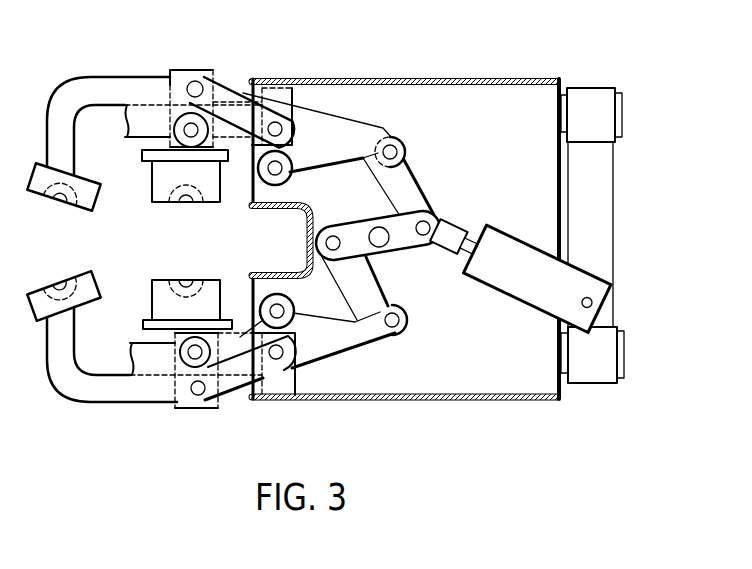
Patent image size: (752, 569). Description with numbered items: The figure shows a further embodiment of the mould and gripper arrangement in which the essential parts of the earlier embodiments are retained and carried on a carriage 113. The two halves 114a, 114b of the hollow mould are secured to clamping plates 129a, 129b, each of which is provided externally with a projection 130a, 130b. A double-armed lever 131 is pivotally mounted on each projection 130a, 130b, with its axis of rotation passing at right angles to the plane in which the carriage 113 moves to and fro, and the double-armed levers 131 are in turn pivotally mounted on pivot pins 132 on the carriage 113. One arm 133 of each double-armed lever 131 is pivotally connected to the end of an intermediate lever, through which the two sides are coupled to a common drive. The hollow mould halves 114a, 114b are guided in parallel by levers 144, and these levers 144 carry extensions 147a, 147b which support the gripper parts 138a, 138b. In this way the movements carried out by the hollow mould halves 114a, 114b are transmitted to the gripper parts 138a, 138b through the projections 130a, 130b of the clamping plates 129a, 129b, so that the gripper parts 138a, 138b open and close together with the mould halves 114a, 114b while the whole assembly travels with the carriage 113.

The carriage 113 is at (403, 401).
The hollow mould half 114a is at (160, 283).
The hollow mould half 114b is at (160, 194).
The clamping plate 129a is at (228, 320).
The clamping plate 129b is at (228, 162).
The projection 130a is at (193, 409).
The projection 130b is at (192, 70).
The double-armed lever 131 is at (345, 138).
The pivot pin 132 is at (275, 168).
The arm of lever 133 is at (385, 131).
The gripper part 138a is at (40, 290).
The gripper part 138b is at (38, 196).
The lever 144 is at (224, 93).
The extension of lever 147a is at (102, 401).
The extension of lever 147b is at (107, 88).